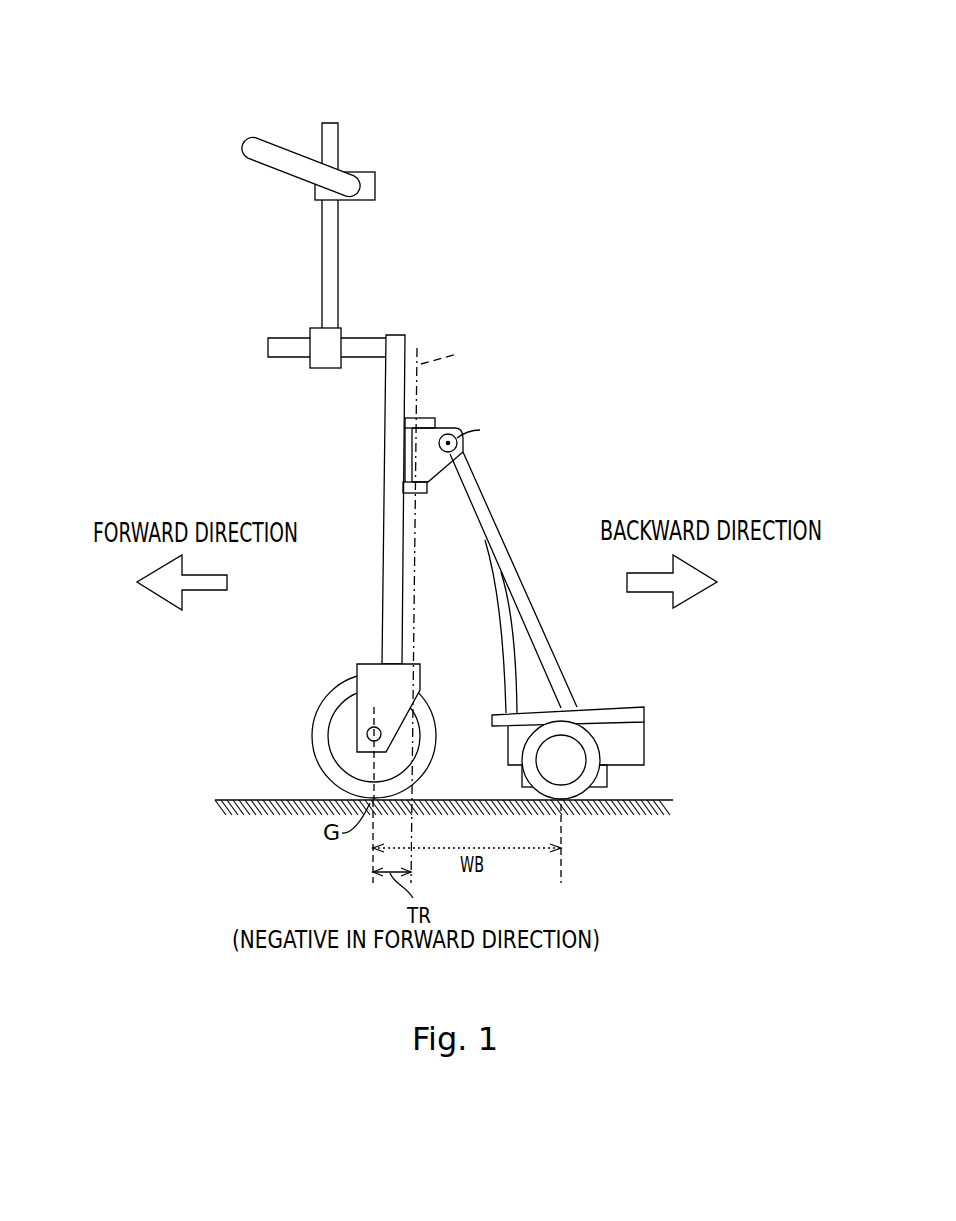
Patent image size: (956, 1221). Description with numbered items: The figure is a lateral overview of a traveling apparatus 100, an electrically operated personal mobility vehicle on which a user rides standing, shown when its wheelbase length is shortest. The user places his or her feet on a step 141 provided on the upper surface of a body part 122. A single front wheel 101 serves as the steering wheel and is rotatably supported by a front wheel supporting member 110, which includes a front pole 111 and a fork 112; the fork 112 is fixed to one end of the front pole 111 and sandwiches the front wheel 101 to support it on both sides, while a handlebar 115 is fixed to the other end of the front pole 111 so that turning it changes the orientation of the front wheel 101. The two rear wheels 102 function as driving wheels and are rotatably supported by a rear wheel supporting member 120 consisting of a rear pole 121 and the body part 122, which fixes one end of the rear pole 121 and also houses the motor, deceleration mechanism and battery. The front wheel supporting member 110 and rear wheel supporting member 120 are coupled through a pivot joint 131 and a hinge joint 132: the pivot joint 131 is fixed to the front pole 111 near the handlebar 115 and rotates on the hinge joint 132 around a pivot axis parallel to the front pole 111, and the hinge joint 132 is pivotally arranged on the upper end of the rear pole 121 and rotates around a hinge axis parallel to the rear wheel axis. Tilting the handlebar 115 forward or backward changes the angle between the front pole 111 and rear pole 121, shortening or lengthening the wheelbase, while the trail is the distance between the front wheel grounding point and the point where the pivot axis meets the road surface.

The traveling apparatus 100 is at (525, 46).
The front wheel 101 is at (320, 739).
The rear wheels 102 is at (587, 783).
The front wheel supporting member 110 is at (304, 602).
The front pole 111 is at (387, 632).
The fork 112 is at (365, 667).
The handlebar 115 is at (247, 143).
The rear wheel supporting member 120 is at (705, 663).
The rear pole 121 is at (565, 695).
The body part 122 is at (640, 732).
The pivot joint 131 is at (405, 427).
The hinge joint 132 is at (422, 457).
The step 141 is at (495, 712).